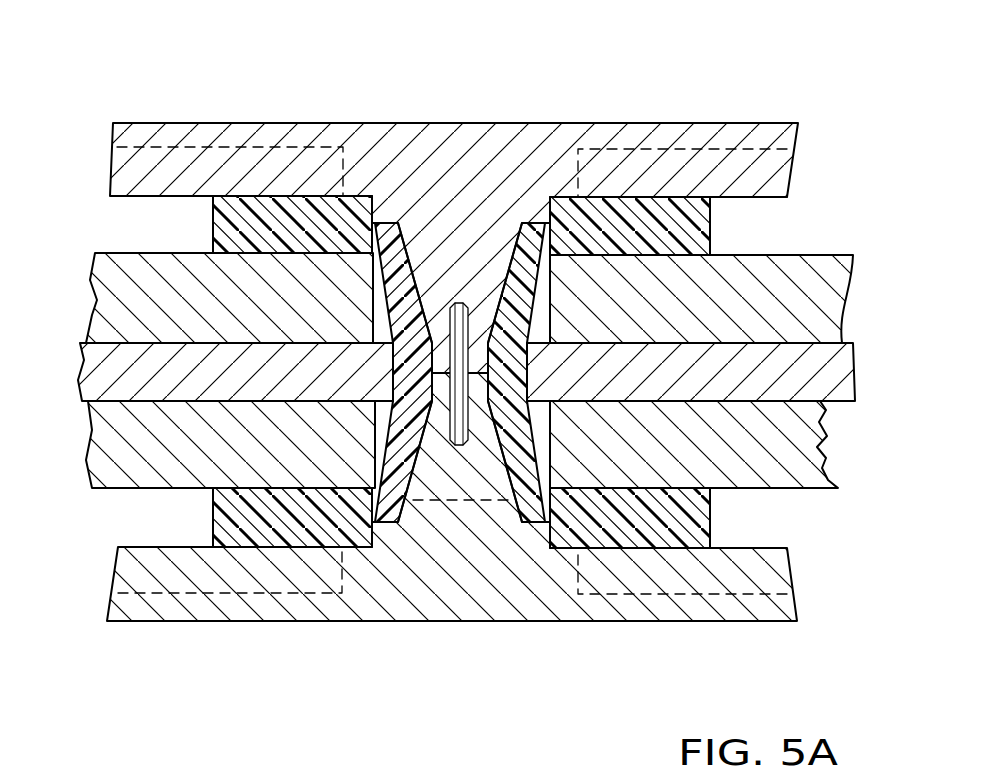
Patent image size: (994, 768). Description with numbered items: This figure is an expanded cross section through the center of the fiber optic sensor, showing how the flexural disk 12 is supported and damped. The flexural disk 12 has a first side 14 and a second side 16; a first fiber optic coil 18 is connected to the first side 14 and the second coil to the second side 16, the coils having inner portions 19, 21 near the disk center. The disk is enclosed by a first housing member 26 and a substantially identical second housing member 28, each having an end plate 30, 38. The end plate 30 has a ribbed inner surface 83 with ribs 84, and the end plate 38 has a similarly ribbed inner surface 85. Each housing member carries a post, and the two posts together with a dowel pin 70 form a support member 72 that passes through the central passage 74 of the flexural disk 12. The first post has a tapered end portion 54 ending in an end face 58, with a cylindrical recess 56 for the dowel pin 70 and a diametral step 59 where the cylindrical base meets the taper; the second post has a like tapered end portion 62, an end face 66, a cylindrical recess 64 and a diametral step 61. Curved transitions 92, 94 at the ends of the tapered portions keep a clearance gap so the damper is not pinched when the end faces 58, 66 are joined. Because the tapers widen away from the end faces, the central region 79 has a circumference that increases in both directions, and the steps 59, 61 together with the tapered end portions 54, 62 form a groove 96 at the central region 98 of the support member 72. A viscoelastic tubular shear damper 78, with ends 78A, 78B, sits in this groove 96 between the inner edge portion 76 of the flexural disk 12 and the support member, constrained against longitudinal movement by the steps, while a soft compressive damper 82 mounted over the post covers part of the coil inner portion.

The flexural disk 12 is at (823, 343).
The first side 14 is at (785, 403).
The second side 16 is at (785, 343).
The first fiber optic coil 18 is at (827, 468).
The inner portion of first fiber optic coil 19 is at (267, 490).
The inner portion of second fiber optic coil 21 is at (258, 247).
The first housing member 26 is at (237, 621).
The second housing member 28 is at (707, 123).
The end plate 30 is at (713, 621).
The end plate 38 is at (318, 123).
The end portion 54 is at (590, 480).
The cylindrical recess 56 is at (458, 455).
The end face 58 is at (490, 365).
The diametral step 59 is at (374, 482).
The diametral step 61 is at (346, 254).
The end portion 62 is at (550, 290).
The cylindrical recess 64 is at (472, 308).
The end face 66 is at (440, 402).
The dowel pin 70 is at (473, 375).
The support member 72 is at (334, 323).
The central passage 74 is at (607, 415).
The inner edge portion 76 is at (387, 523).
The shear damper 78 is at (392, 223).
The end of shear damper 78A is at (523, 513).
The end of shear damper 78B is at (530, 223).
The central region 79 is at (562, 328).
The compressive damper 82 is at (213, 527).
The ribbed inner surface 83 is at (148, 545).
The ribs 84 is at (213, 196).
The inner surface 85 is at (150, 196).
The curved transition 92 is at (476, 402).
The curved transition 94 is at (443, 373).
The groove 96 is at (352, 418).
The central region 98 is at (224, 422).